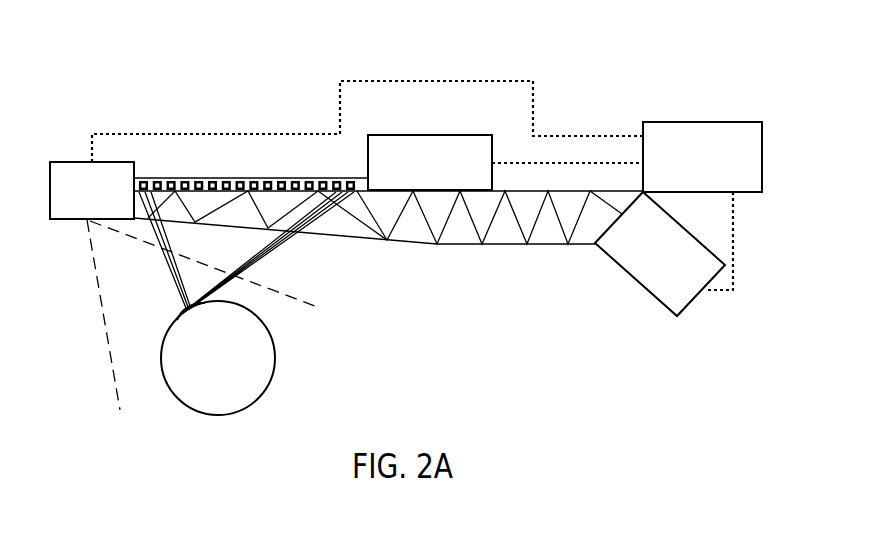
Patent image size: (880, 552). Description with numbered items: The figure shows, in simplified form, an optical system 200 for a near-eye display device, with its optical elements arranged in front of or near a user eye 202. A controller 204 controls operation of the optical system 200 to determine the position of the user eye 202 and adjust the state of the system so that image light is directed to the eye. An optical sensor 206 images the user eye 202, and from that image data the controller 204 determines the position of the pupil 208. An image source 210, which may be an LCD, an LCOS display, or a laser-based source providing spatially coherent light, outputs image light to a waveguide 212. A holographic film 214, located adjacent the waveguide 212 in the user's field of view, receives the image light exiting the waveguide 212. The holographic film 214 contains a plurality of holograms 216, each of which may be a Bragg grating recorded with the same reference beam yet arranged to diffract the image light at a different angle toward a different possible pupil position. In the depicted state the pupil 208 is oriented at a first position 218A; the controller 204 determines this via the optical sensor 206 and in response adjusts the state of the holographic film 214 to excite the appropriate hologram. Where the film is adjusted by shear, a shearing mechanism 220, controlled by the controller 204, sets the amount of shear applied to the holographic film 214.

The optical system 200 is at (620, 55).
The user eye 202 is at (218, 415).
The controller 204 is at (700, 122).
The optical sensor 206 is at (64, 162).
The pupil 208 is at (190, 322).
The image source 210 is at (657, 297).
The waveguide 212 is at (457, 245).
The holographic film 214 is at (227, 178).
The hologram 216 is at (300, 169).
The first position 218A is at (172, 298).
The shearing mechanism 220 is at (393, 135).